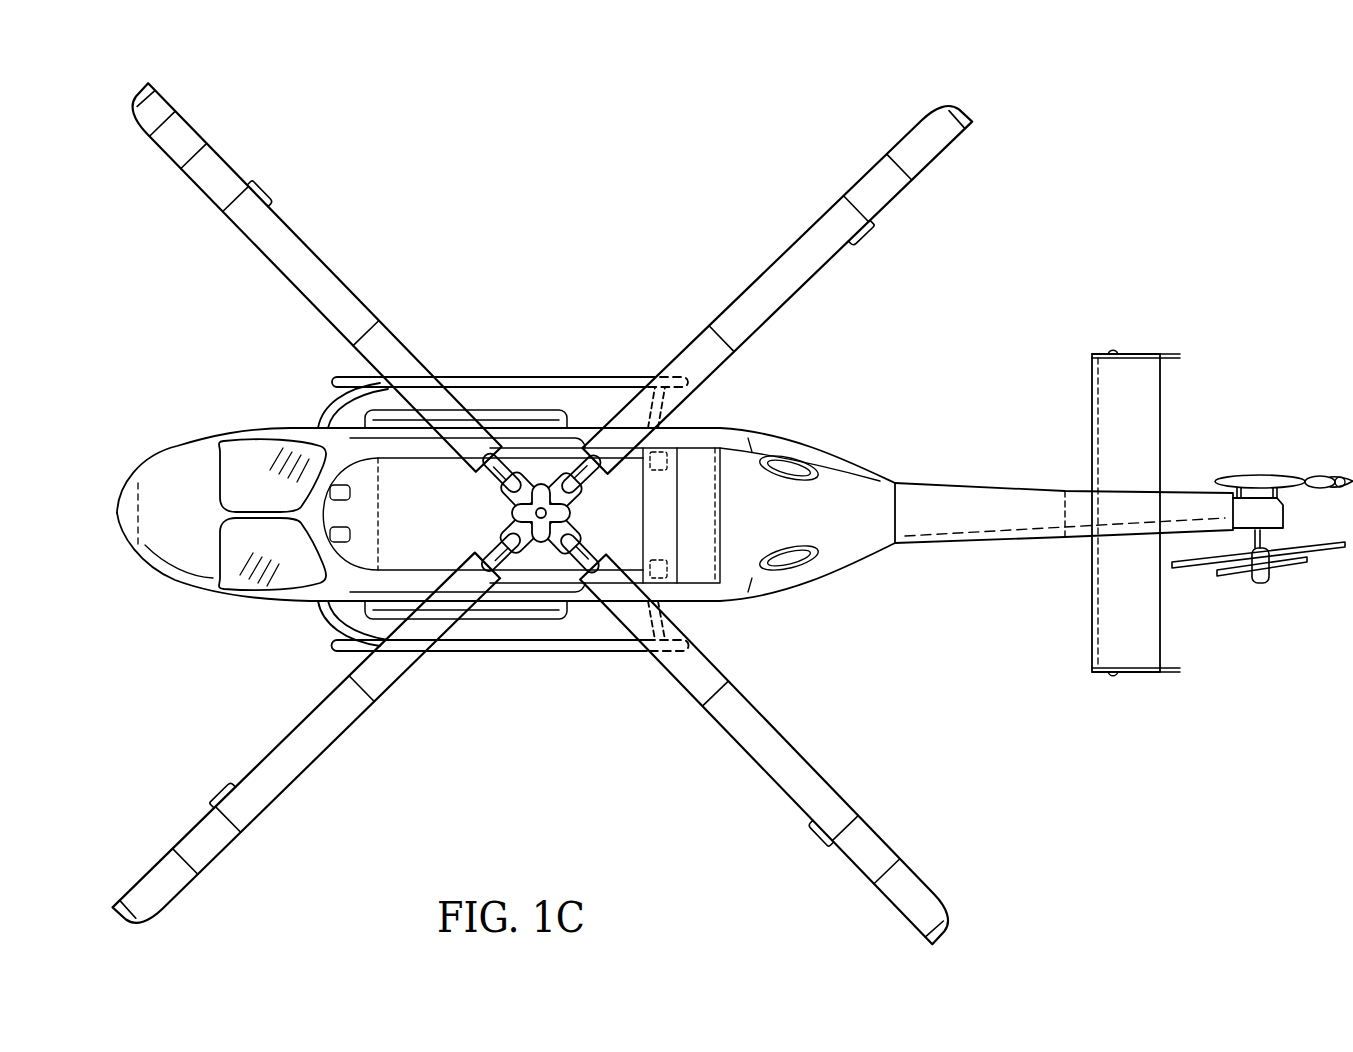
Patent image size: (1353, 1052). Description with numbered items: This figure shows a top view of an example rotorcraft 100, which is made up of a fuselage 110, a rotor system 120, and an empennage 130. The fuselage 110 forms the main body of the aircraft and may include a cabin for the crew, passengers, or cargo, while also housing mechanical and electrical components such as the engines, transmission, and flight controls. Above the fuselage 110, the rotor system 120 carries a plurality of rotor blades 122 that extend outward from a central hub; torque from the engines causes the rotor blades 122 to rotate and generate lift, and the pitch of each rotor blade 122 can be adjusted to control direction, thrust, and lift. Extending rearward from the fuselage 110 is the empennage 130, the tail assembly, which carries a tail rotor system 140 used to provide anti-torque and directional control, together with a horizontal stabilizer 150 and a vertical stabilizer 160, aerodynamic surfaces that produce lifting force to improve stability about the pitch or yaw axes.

The rotorcraft 100 is at (287, 103).
The fuselage 110 is at (746, 594).
The rotor system 120 is at (540, 466).
The rotor blade 122 is at (764, 273).
The empennage 130 is at (993, 556).
The tail rotor system 140 is at (1272, 600).
The horizontal stabilizer 150 is at (1161, 632).
The vertical stabilizer 160 is at (1257, 476).